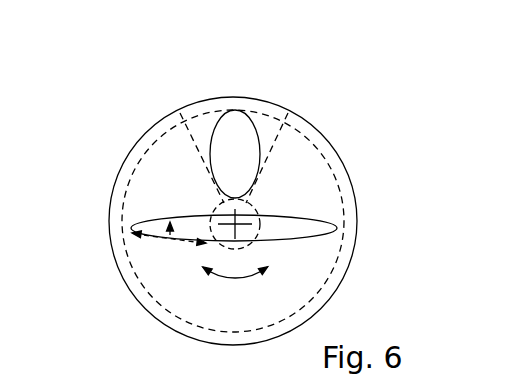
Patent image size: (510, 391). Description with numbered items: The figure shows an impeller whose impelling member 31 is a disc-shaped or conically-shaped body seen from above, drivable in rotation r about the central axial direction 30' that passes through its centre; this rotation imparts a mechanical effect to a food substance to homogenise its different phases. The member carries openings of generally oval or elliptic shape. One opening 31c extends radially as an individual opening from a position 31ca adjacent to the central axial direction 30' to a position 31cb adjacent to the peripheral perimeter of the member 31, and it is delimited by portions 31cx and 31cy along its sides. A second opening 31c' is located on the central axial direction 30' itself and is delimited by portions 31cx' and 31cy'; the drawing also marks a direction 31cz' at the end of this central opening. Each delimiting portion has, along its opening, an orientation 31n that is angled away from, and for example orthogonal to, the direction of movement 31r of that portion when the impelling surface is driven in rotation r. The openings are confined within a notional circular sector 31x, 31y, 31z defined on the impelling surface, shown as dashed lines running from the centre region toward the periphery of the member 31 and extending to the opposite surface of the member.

The impelling member 31 is at (345, 190).
The notional circular sector 31z is at (250, 97).
The opening 31c is at (210, 120).
The portion 31cy is at (287, 106).
The notional circular sector 31x is at (200, 158).
The notional circular sector 31y is at (272, 150).
The z'-axis 31cz' is at (85, 189).
The portion 31cx is at (170, 191).
The portion 31cx' is at (355, 169).
The position adjacent to peripheral perimeter 31cb is at (337, 228).
The portion 31cy' is at (361, 260).
The position adjacent to central axial direction 31ca is at (243, 247).
The central axial direction 30' is at (204, 261).
The rotation r is at (250, 276).
The opening 31c' is at (126, 254).
The direction of movement 31r is at (172, 244).
The orientation 31n is at (183, 238).